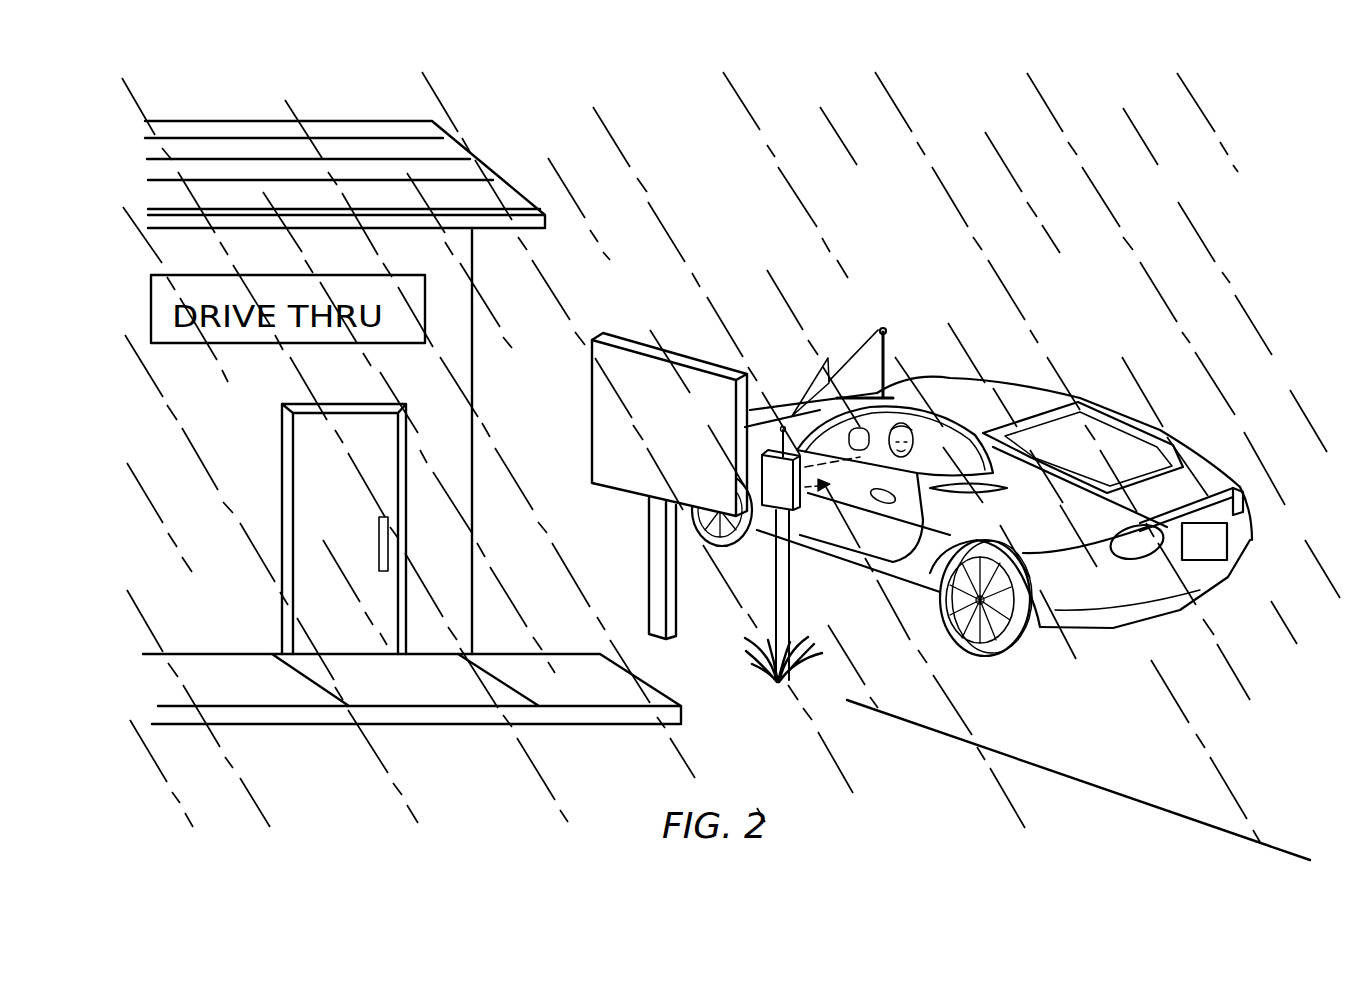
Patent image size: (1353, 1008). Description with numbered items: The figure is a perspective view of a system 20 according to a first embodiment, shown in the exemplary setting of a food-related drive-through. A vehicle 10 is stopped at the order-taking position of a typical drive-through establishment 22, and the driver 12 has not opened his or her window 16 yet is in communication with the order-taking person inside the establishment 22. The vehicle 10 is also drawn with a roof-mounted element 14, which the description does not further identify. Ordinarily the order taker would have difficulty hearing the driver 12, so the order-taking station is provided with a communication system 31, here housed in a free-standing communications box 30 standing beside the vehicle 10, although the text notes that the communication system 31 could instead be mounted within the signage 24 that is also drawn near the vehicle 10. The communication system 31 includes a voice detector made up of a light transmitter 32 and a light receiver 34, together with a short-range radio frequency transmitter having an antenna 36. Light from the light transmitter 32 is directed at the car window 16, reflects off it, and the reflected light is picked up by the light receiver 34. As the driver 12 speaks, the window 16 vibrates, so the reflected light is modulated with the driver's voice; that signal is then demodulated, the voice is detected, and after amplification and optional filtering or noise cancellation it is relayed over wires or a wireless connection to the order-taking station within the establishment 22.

The vehicle 10 is at (972, 480).
The driver 12 is at (922, 493).
The vehicle antenna 14 is at (887, 337).
The window 16 is at (905, 462).
The system 20 is at (608, 214).
The drive-through establishment 22 is at (442, 167).
The signage 24 is at (632, 392).
The free-standing communications box 30 is at (780, 492).
The communication system 31 is at (762, 558).
The light transmitter 32 is at (818, 487).
The light receiver 34 is at (817, 490).
The antenna 36 is at (783, 430).